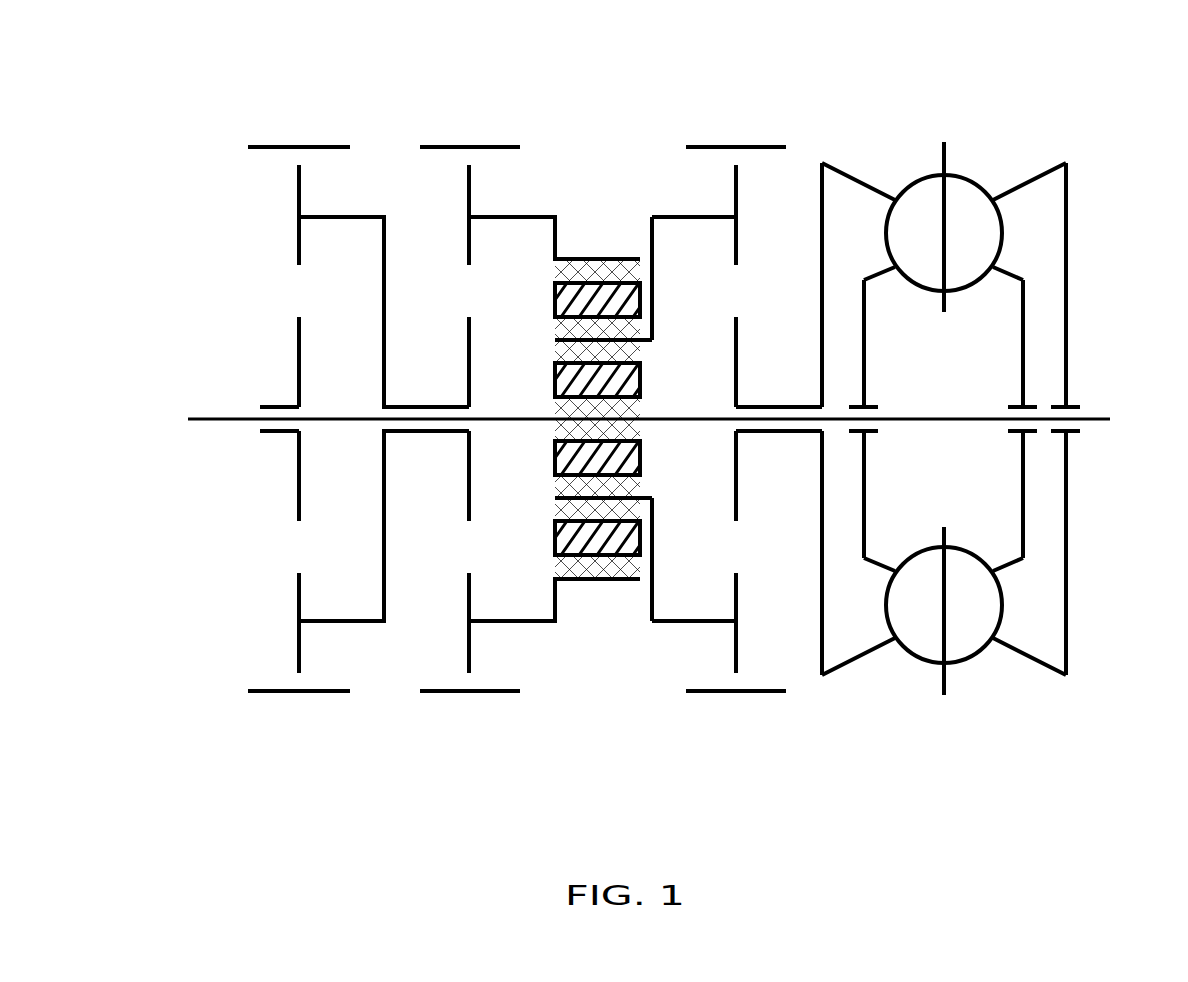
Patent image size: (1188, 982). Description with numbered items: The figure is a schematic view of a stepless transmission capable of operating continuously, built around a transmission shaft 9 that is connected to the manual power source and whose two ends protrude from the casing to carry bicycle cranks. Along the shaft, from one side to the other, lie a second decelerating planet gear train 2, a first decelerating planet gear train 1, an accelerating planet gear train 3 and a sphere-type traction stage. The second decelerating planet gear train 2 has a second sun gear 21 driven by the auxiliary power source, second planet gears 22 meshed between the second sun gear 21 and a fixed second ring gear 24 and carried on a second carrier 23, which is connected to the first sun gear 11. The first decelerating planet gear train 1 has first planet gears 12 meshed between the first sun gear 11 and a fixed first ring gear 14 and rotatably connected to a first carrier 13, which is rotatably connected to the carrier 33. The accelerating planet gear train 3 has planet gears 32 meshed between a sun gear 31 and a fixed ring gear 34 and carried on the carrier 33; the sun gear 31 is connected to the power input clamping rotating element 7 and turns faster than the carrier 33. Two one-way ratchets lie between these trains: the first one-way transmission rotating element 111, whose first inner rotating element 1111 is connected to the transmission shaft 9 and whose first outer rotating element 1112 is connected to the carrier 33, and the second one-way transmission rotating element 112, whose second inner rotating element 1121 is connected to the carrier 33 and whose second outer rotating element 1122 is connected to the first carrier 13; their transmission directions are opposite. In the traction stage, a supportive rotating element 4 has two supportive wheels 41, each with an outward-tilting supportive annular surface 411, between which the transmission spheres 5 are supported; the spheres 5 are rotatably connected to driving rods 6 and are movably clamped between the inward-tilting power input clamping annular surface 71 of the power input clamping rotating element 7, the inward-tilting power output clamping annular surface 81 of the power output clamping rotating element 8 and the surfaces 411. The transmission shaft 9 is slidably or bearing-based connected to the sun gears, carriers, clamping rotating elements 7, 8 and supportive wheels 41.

The first decelerating planet gear train 1 is at (612, 68).
The first sun gear 11 is at (467, 357).
The first planet gears 12 is at (472, 190).
The first carrier 13 is at (528, 217).
The first ring gear 14 is at (478, 147).
The first one-way transmission rotating element 111 is at (642, 419).
The first inner rotating element 1111 is at (605, 396).
The first outer rotating element 1112 is at (605, 465).
The second one-way transmission rotating element 112 is at (606, 426).
The second inner rotating element 1121 is at (595, 520).
The second outer rotating element 1122 is at (640, 307).
The second decelerating planet gear train 2 is at (437, 762).
The second sun gear 21 is at (297, 493).
The second planet gears 22 is at (300, 643).
The second carrier 23 is at (343, 622).
The second ring gear 24 is at (297, 697).
The accelerating planet gear train 3 is at (805, 762).
The sun gear 31 is at (738, 483).
The planet gears 32 is at (733, 648).
The carrier 33 is at (678, 622).
The ring gear 34 is at (735, 695).
The supportive rotating element 4 is at (893, 762).
The supportive wheels 41 is at (1007, 506).
The outward-tilting supportive annular surface 411 is at (984, 252).
The transmission spheres 5 is at (963, 200).
The driving rods 6 is at (947, 155).
The power input clamping rotating element 7 is at (884, 373).
The inward-tilting power input clamping annular surface 71 is at (898, 200).
The power output clamping rotating element 8 is at (1071, 419).
The inward-tilting power output clamping annular surface 81 is at (985, 210).
The transmission shaft 9 is at (219, 420).